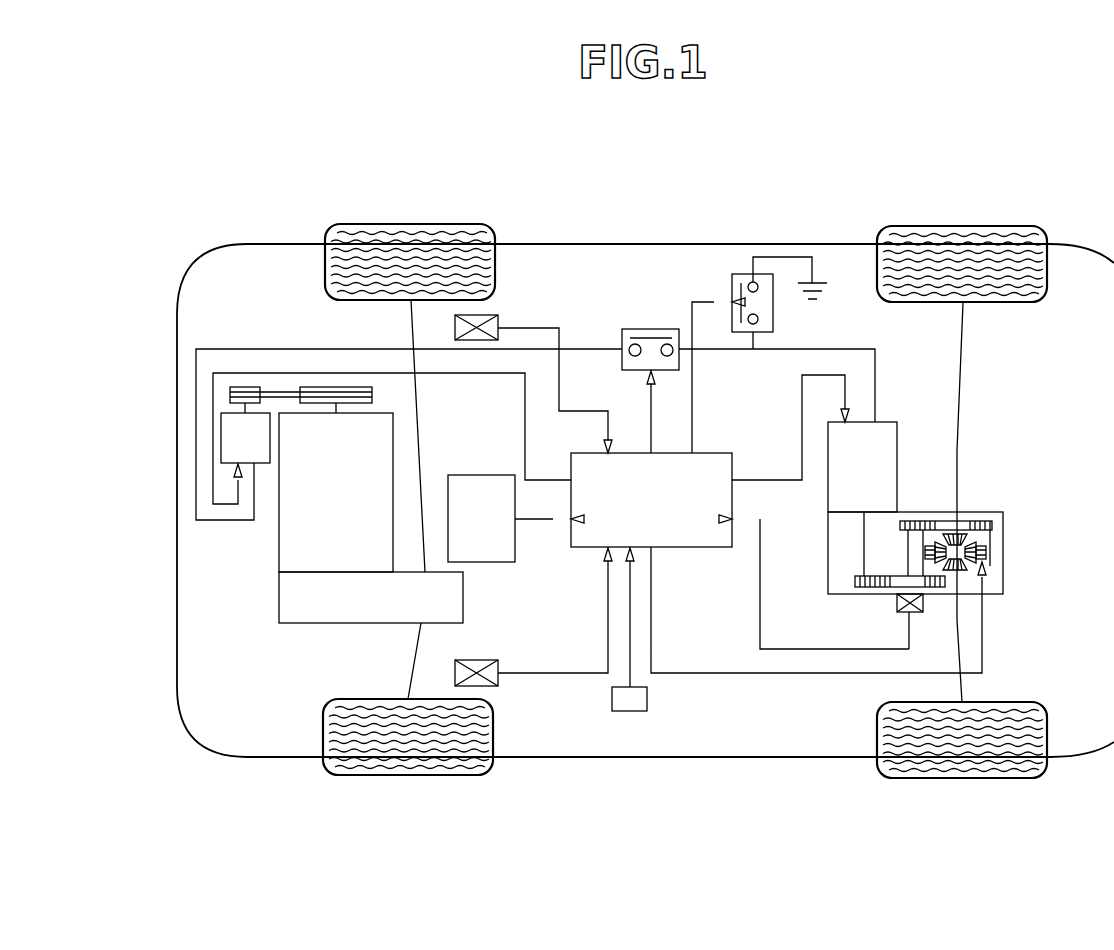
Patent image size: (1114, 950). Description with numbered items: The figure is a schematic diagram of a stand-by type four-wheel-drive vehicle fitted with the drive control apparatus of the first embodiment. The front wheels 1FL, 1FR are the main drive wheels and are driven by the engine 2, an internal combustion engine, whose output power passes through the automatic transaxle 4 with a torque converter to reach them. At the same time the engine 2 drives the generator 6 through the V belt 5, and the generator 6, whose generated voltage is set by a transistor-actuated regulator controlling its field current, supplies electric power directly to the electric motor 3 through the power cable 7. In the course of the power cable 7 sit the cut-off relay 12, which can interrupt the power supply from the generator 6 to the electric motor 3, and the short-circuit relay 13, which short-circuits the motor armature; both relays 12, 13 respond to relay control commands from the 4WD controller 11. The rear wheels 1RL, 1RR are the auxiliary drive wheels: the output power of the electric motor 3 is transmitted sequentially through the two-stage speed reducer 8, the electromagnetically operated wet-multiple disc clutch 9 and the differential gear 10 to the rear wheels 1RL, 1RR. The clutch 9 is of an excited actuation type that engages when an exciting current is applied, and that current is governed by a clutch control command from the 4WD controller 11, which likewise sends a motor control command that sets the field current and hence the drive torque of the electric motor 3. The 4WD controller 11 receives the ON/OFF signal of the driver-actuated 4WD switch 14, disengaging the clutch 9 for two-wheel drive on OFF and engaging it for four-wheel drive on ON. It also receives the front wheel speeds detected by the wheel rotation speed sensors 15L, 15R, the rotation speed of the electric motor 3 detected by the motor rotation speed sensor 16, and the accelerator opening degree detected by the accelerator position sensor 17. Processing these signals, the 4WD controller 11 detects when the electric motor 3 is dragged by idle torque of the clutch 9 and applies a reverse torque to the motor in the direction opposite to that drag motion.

The front wheel 1FR is at (425, 224).
The front wheel 1FL is at (405, 777).
The rear wheel 1RR is at (975, 226).
The rear wheel 1RL is at (963, 778).
The engine 2 is at (279, 552).
The electric motor 3 is at (897, 434).
The automatic transaxle 4 is at (315, 623).
The V belt 5 is at (282, 392).
The generator 6 is at (221, 440).
The power cable 7 is at (303, 349).
The two-stage speed reducer 8 is at (882, 524).
The clutch 9 is at (986, 540).
The differential gear 10 is at (972, 578).
The 4WD controller 11 is at (696, 548).
The cut-off relay 12 is at (650, 329).
The short-circuit relay 13 is at (773, 318).
The 4WD switch 14 is at (500, 562).
The wheel rotation speed sensor 15R is at (498, 320).
The wheel rotation speed sensor 15L is at (498, 680).
The motor rotation speed sensor 16 is at (900, 603).
The accelerator position sensor 17 is at (647, 700).